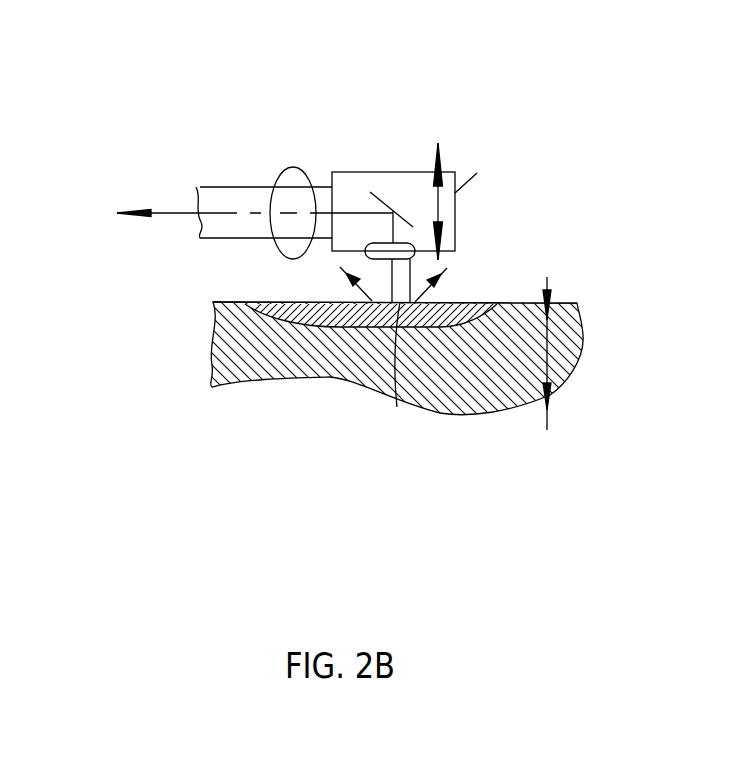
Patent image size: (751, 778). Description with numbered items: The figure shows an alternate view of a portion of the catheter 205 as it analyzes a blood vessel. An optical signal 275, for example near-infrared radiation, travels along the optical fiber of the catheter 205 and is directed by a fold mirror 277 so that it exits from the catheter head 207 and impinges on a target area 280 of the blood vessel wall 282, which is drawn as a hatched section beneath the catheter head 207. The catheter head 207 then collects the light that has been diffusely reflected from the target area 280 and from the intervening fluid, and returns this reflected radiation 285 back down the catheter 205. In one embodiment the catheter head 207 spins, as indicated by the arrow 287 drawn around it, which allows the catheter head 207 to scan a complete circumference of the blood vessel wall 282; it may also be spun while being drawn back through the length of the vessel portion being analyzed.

The catheter 205 is at (228, 187).
The reflected radiation 285 is at (253, 212).
The arrow 287 is at (308, 172).
The fold mirror 277 is at (393, 210).
The catheter head 207 is at (456, 202).
The target area 280 is at (463, 303).
The optical signal 275 is at (392, 288).
The blood vessel wall 282 is at (578, 347).